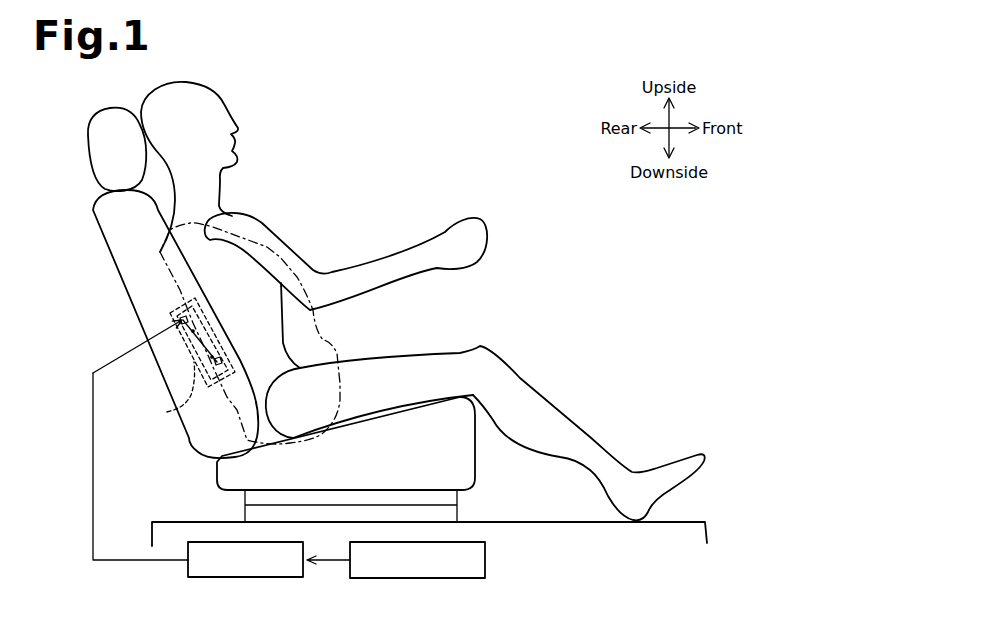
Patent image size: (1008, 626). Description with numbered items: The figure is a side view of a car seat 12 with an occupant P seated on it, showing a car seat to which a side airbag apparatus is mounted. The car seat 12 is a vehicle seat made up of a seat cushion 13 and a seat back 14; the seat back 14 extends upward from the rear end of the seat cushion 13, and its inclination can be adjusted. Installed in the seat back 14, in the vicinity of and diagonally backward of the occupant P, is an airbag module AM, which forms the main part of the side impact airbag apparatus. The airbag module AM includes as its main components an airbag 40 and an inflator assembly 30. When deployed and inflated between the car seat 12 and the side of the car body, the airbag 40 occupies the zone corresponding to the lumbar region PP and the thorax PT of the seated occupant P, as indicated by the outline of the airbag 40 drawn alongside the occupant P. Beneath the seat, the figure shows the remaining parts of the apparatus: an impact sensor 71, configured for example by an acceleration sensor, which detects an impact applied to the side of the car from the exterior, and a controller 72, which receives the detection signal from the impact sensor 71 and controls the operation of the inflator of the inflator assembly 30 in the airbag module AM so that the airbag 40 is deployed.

The occupant P is at (217, 92).
The thorax PT is at (283, 322).
The lumbar region PP is at (267, 427).
The airbag 40 is at (287, 240).
The car seat 12 is at (270, 315).
The seat back 14 is at (132, 288).
The seat cushion 13 is at (462, 458).
The inflator assembly 30 is at (197, 357).
The airbag module AM is at (165, 394).
The controller 72 is at (277, 578).
The impact sensor 71 is at (448, 580).